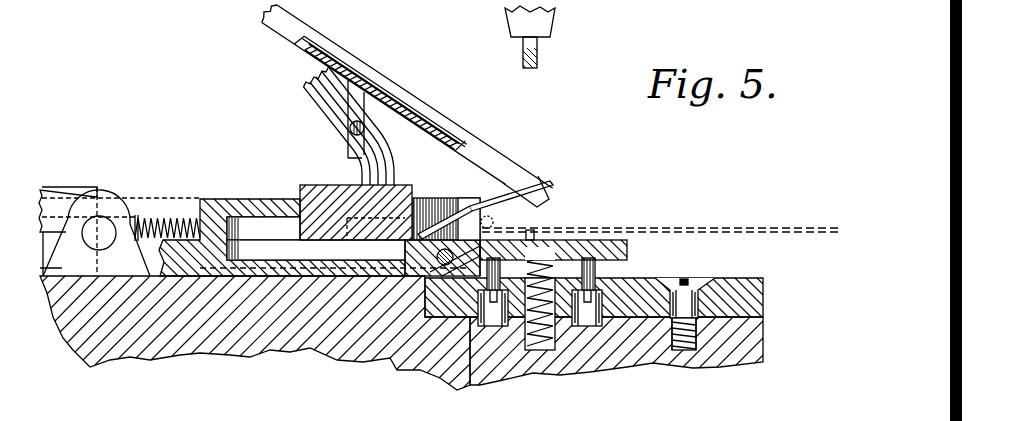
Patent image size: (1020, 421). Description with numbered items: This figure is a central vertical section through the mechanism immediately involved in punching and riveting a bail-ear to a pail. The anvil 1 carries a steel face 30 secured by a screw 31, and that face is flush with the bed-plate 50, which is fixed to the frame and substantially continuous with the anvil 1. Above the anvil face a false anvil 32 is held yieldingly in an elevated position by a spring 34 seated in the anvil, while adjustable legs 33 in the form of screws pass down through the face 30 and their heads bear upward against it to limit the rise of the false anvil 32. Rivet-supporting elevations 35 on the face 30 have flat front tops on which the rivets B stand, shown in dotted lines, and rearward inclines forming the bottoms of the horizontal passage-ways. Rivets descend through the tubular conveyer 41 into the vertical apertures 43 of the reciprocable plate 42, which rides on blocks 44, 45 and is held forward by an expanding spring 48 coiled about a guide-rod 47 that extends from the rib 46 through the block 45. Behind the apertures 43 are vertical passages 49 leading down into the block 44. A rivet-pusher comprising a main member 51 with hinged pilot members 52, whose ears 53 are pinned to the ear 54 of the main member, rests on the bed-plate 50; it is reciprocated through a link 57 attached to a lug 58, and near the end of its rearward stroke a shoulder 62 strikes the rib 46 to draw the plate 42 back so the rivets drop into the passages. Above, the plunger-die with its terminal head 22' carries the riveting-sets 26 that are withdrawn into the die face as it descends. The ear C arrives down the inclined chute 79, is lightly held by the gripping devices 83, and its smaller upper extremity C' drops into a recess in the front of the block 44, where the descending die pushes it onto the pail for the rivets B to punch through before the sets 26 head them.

The anvil 1 is at (765, 350).
The terminal head 22' is at (551, 21).
The riveting-set 26 is at (538, 53).
The steel face 30 is at (752, 277).
The screw 31 is at (699, 280).
The false anvil 32 is at (630, 256).
The adjustable legs 33 is at (500, 274).
The spring 34 is at (545, 340).
The rivet-supporting elevations 35 is at (557, 270).
The tubular conveyer 41 is at (332, 118).
The reciprocable plate 42 is at (233, 200).
The vertical apertures 43 is at (350, 188).
The block 44 is at (422, 199).
The block 45 is at (82, 187).
The rib 46 is at (217, 253).
The guide-rod 47 is at (160, 215).
The expanding spring 48 is at (145, 216).
The vertical passages 49 is at (358, 238).
The bed-plate 50 is at (290, 349).
The main member 51 is at (268, 270).
The pilot members 52 is at (478, 252).
The ears 53 is at (469, 219).
The ear 54 is at (440, 265).
The link 57 is at (57, 189).
The lug 58 is at (96, 233).
The shoulder 62 is at (404, 248).
The chute 79 is at (420, 111).
The gripping devices 83 is at (552, 204).
The rivets B is at (534, 236).
The ear C is at (521, 188).
The upper extremity of the ear C' is at (445, 210).